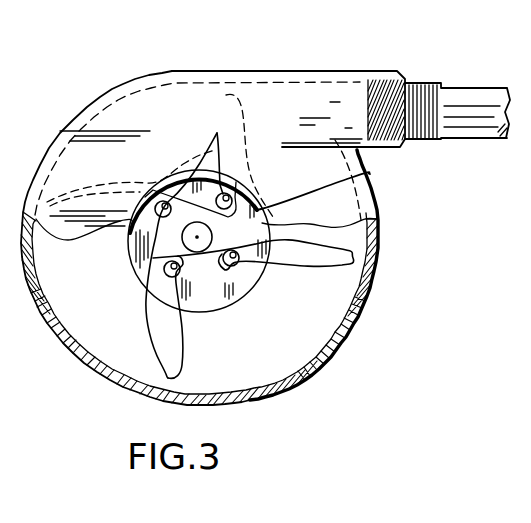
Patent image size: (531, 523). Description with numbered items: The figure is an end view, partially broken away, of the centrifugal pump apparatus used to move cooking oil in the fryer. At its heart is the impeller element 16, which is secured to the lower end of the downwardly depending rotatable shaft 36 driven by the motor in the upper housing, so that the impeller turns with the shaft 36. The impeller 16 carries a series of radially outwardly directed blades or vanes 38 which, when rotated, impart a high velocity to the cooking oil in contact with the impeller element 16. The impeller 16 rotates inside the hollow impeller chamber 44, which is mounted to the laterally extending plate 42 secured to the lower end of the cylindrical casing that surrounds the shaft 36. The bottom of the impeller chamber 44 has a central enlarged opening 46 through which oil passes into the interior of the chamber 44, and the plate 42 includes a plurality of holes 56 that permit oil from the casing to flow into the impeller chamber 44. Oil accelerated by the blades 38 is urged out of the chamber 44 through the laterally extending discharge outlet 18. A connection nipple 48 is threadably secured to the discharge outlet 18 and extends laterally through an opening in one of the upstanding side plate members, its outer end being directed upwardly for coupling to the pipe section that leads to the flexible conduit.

The impeller element 16 is at (315, 278).
The discharge outlet 18 is at (327, 100).
The rotatable shaft 36 is at (212, 240).
The blades or vanes 38 is at (234, 96).
The laterally extending plate 42 is at (127, 268).
The impeller chamber 44 is at (142, 107).
The central enlarged opening 46 is at (372, 174).
The connection nipple 48 is at (460, 97).
The holes 56 is at (216, 138).